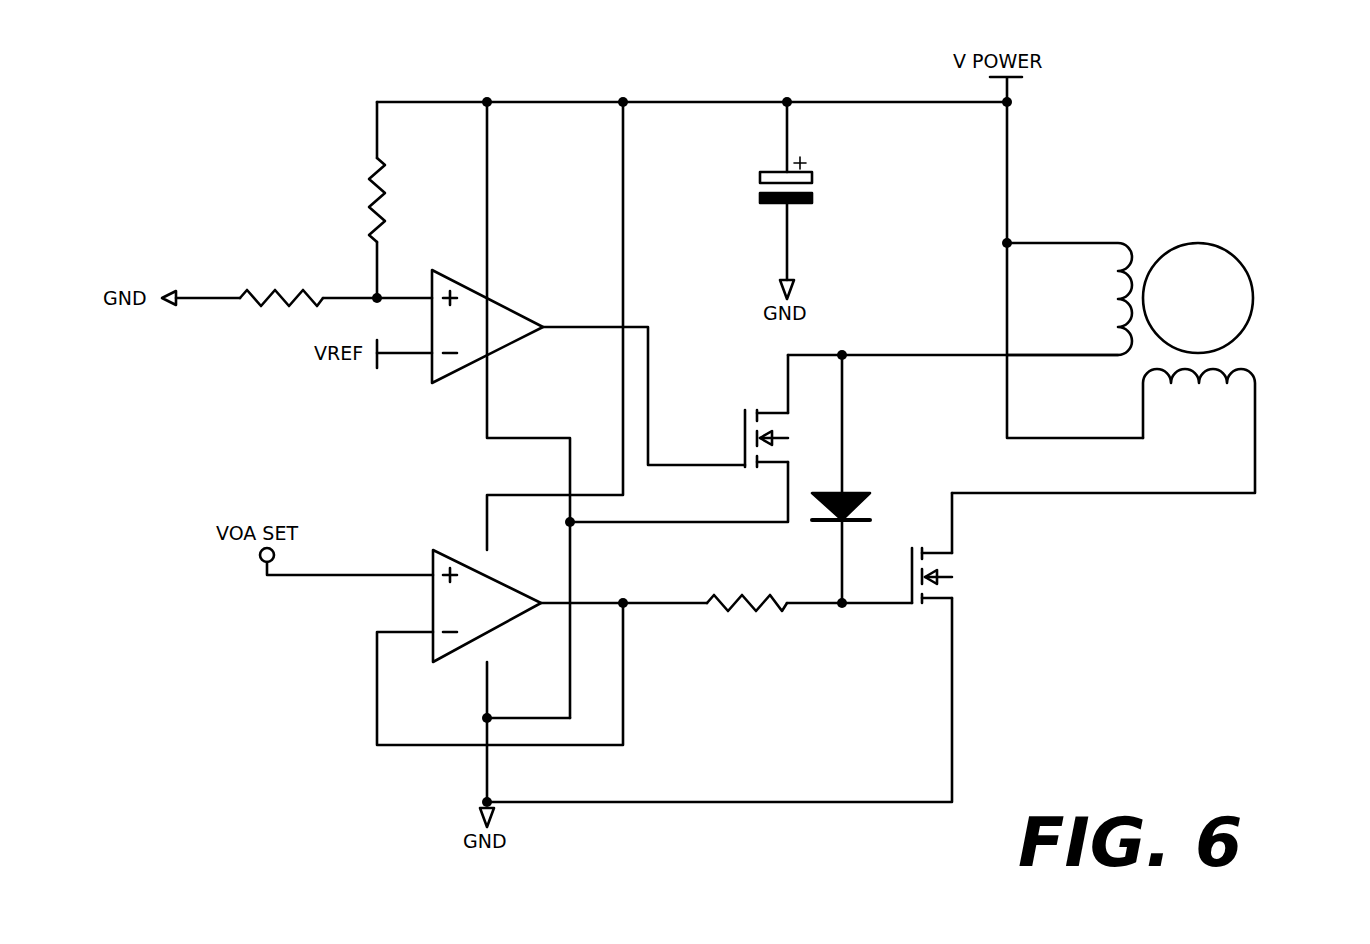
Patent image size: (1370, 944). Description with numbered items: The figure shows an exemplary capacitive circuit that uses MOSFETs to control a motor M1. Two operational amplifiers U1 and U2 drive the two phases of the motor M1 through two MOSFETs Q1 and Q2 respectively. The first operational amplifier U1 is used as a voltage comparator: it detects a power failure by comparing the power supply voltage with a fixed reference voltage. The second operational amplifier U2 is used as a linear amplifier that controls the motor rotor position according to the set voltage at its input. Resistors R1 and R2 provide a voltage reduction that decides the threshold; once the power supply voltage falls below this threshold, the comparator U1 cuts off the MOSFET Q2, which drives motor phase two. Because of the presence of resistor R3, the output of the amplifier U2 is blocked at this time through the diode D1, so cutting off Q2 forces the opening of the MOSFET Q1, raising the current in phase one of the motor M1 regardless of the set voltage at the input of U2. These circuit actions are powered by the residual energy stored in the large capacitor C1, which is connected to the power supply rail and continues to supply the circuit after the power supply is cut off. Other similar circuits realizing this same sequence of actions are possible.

The resistor R1 is at (409, 200).
The resistor R2 is at (285, 269).
The resistor R3 is at (747, 588).
The operational amplifier U1 is at (493, 325).
The operational amplifier U2 is at (494, 603).
The capacitor C1 is at (783, 169).
The MOSFET Q1 is at (966, 575).
The MOSFET Q2 is at (746, 408).
The diode D1 is at (859, 492).
The motor M1 is at (1148, 368).